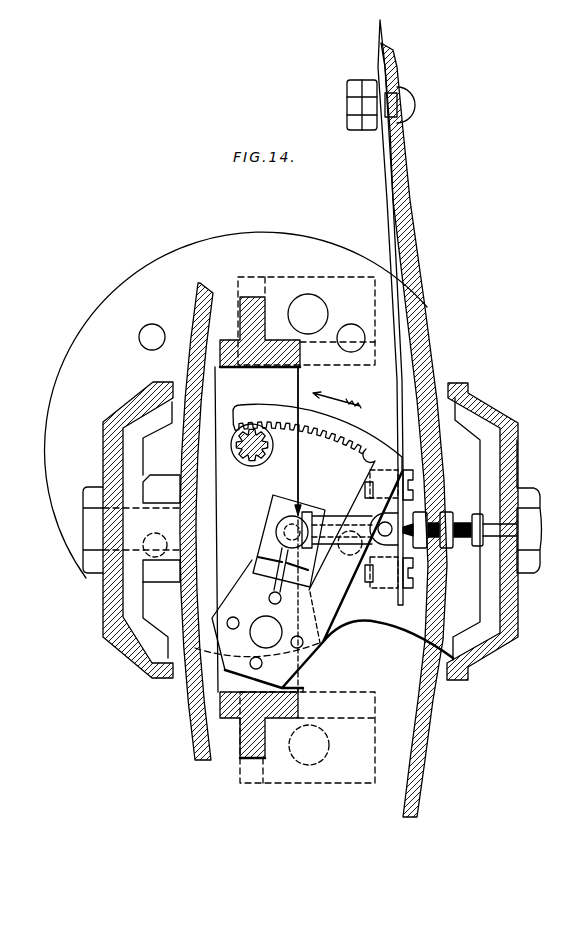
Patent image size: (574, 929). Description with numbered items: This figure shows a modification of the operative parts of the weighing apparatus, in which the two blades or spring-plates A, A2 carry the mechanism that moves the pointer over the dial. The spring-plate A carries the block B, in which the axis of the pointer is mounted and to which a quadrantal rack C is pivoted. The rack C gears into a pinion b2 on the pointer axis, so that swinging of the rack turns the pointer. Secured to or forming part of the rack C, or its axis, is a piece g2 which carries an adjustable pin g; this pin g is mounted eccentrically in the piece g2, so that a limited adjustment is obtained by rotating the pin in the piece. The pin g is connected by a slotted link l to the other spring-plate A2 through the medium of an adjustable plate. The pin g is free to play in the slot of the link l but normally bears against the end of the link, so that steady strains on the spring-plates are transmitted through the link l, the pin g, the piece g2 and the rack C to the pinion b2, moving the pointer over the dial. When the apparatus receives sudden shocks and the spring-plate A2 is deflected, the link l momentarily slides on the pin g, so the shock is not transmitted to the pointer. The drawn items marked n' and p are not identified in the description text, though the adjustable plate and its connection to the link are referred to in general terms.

The spring-plate A is at (191, 521).
The spring-plate A2 is at (428, 342).
The block B is at (297, 530).
The quadrantal rack C is at (324, 548).
The pinion b2 is at (262, 446).
The adjustable pin g is at (297, 529).
The piece g2 is at (280, 543).
The slotted link l is at (350, 531).
The spring n' is at (390, 316).
The pin p is at (462, 530).